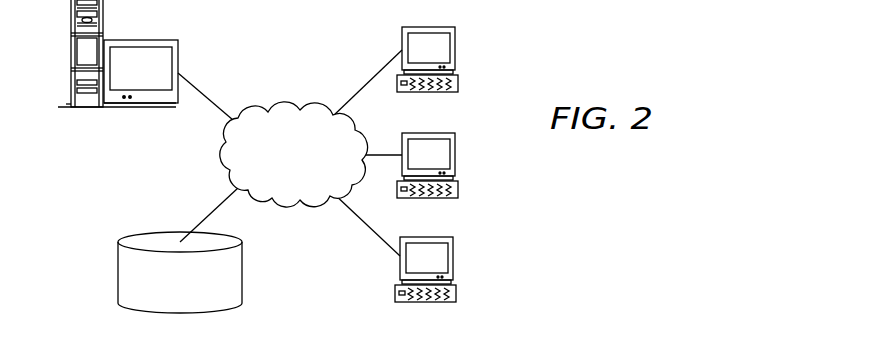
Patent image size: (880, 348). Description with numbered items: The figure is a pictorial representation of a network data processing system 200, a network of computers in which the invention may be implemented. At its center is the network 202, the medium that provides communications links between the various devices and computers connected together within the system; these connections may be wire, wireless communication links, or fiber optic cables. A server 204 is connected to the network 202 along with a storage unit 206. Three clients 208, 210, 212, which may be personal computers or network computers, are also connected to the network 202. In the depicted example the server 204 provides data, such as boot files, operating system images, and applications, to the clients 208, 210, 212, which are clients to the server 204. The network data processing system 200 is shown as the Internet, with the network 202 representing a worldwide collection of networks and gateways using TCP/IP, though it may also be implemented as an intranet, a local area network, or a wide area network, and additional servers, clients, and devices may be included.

The network data processing system 200 is at (540, 200).
The network 202 is at (262, 104).
The server 204 is at (71, 53).
The storage unit 206 is at (118, 272).
The client 208 is at (455, 52).
The client 210 is at (455, 150).
The client 212 is at (453, 262).